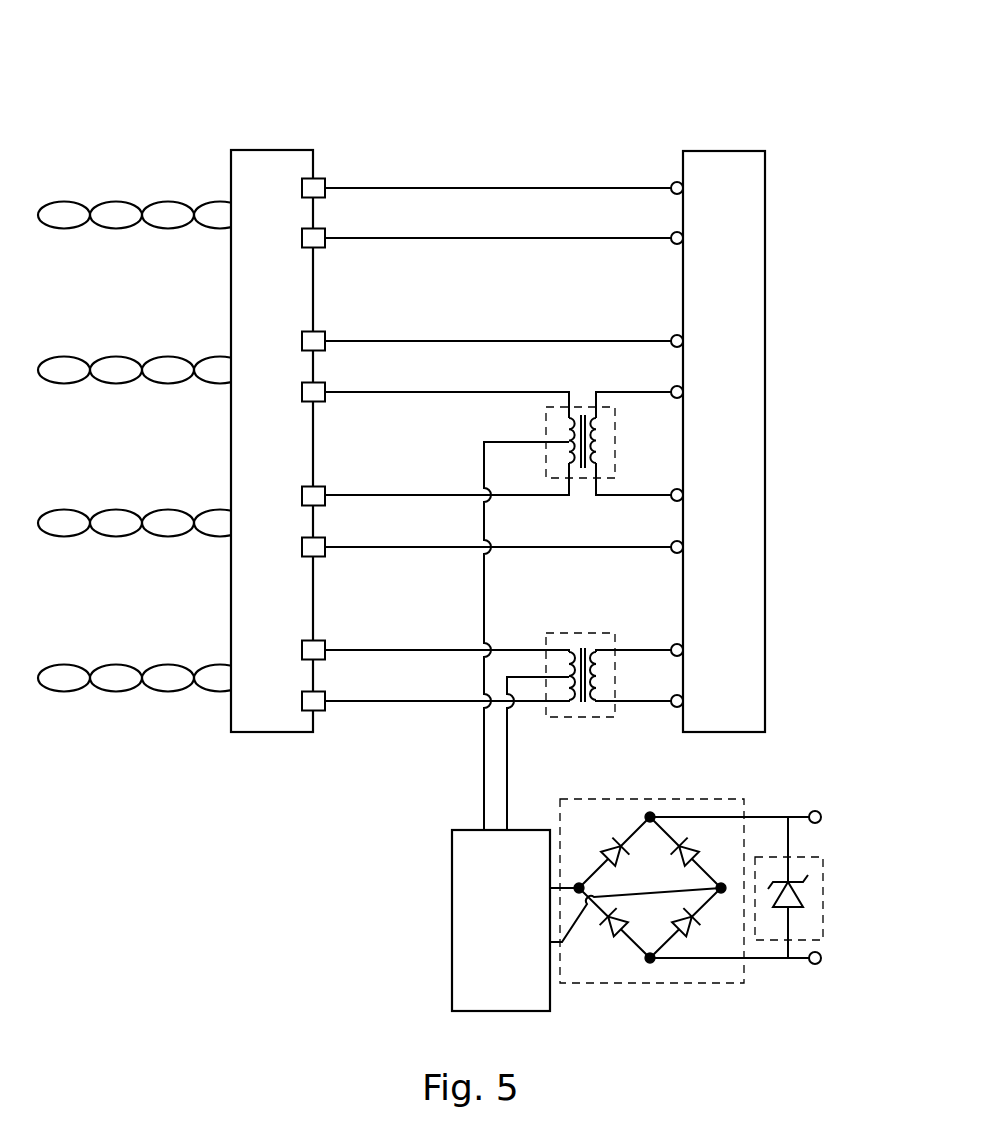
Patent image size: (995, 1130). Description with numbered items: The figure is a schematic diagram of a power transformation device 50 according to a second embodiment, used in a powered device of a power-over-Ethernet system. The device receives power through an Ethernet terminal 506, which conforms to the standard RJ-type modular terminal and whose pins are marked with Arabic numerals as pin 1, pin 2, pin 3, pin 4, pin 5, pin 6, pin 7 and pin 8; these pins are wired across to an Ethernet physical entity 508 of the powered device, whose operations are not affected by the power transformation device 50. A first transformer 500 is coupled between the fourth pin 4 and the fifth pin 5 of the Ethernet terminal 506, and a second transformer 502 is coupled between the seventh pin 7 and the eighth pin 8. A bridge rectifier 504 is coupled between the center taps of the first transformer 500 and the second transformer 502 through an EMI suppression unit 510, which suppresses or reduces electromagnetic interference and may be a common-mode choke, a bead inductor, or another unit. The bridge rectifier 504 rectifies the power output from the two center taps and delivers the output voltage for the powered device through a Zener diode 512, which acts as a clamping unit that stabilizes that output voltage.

The power transformation device 50 is at (257, 58).
The first transformer 500 is at (614, 445).
The second transformer 502 is at (582, 633).
The bridge rectifier 504 is at (682, 799).
The Ethernet terminal 506 is at (272, 150).
The Ethernet physical entity 508 is at (727, 151).
The EMI suppression unit 510 is at (466, 830).
The Zener diode 512 is at (803, 857).
The pin 1 is at (486, 178).
The pin 2 is at (486, 228).
The pin 3 is at (486, 331).
The pin 4 is at (486, 390).
The pin 5 is at (486, 484).
The pin 6 is at (486, 537).
The pin 7 is at (486, 640).
The pin 8 is at (486, 691).